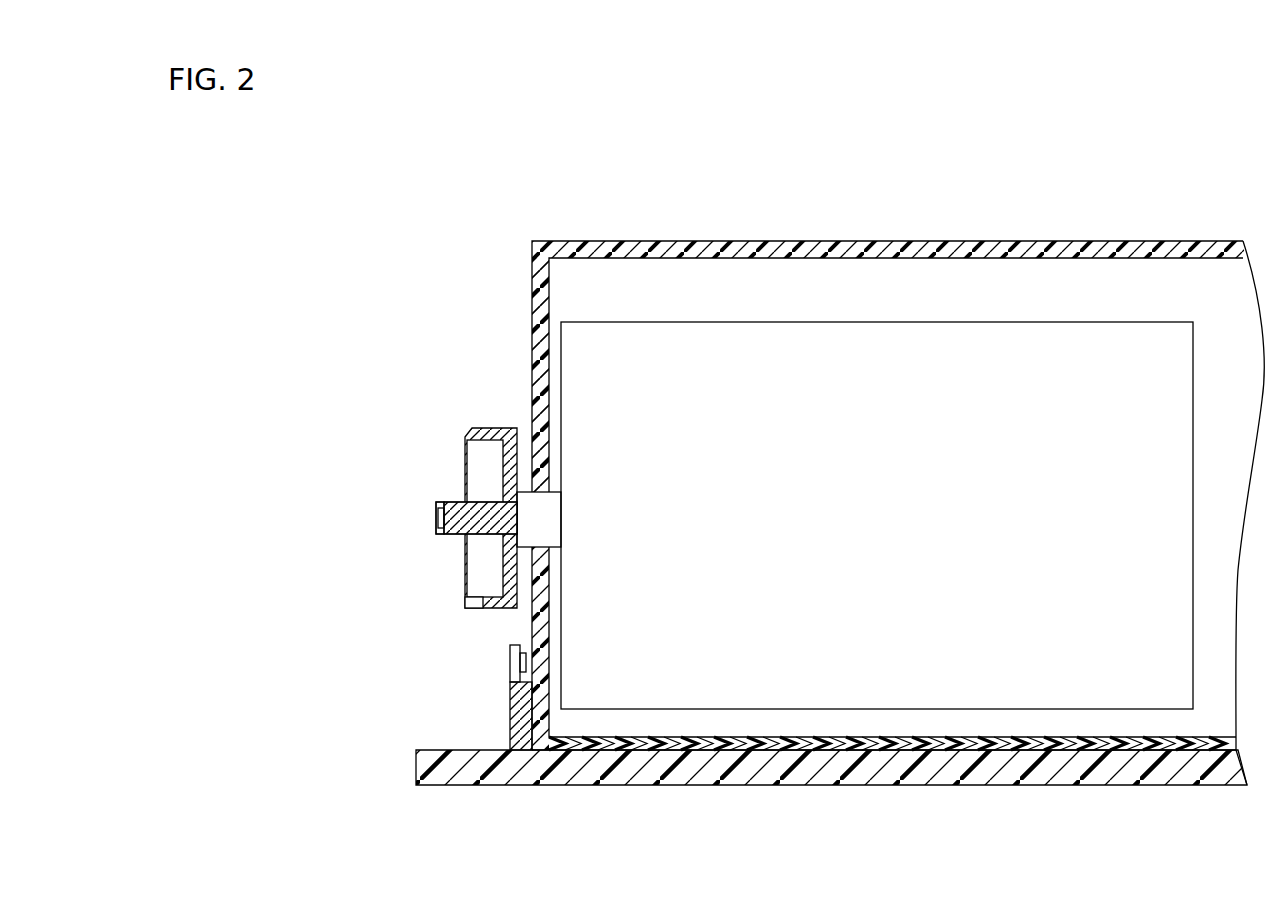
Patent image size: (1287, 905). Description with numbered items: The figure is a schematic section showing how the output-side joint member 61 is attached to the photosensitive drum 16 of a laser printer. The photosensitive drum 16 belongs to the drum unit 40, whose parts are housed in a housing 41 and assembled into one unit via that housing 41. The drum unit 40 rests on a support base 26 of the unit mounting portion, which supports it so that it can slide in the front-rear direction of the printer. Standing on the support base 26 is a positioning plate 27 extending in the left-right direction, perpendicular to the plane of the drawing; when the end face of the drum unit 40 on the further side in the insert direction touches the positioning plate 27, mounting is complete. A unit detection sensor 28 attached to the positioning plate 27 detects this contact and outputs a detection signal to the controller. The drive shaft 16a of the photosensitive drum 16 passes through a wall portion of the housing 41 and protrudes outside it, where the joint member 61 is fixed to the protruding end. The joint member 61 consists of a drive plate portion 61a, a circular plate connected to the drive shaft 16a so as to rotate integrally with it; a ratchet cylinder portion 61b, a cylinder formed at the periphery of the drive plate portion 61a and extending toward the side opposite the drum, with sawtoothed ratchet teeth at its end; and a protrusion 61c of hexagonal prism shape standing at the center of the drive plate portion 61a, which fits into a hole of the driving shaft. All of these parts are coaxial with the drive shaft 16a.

The drum unit 40 is at (573, 243).
The housing 41 is at (690, 241).
The photosensitive drum 16 is at (645, 321).
The drive shaft 16a is at (525, 491).
The output-side joint member 61 is at (443, 478).
The drive plate portion 61a is at (500, 485).
The ratchet cylinder portion 61b is at (497, 428).
The protrusion 61c is at (460, 502).
The support base 26 is at (443, 749).
The positioning plate 27 is at (510, 708).
The unit detection sensor 28 is at (516, 662).